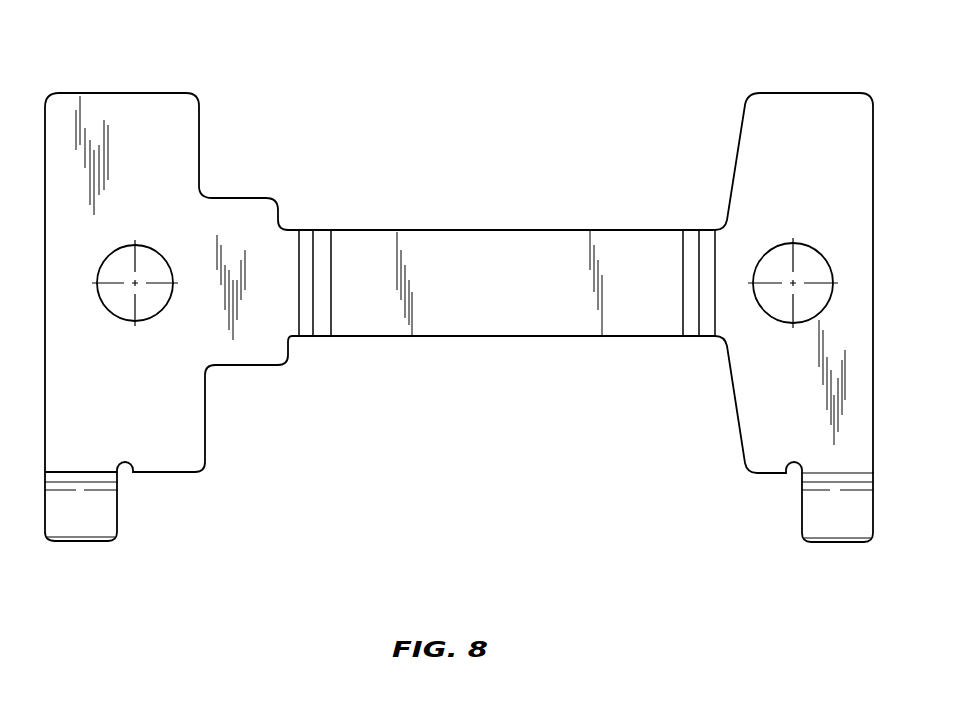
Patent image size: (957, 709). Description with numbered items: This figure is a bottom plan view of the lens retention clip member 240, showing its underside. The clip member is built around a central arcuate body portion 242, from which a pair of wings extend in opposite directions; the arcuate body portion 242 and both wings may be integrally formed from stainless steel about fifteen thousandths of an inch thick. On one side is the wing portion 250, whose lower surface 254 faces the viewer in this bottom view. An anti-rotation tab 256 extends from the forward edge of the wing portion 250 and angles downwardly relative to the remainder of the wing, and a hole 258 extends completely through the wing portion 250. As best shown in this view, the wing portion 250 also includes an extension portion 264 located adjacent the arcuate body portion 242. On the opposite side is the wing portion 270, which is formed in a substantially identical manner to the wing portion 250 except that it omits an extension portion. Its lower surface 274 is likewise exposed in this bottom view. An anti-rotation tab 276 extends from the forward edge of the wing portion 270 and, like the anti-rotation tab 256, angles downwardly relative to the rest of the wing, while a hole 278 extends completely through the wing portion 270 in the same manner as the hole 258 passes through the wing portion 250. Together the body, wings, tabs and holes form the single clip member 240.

The lens retention clip member 240 is at (568, 78).
The arcuate body portion 242 is at (495, 246).
The wing portion 250 is at (146, 120).
The lower surface 254 is at (173, 425).
The anti-rotation tab 256 is at (80, 528).
The hole 258 is at (163, 310).
The extension portion 264 is at (253, 232).
The wing portion 270 is at (803, 120).
The lower surface 274 is at (768, 181).
The anti-rotation tab 276 is at (835, 527).
The hole 278 is at (768, 311).